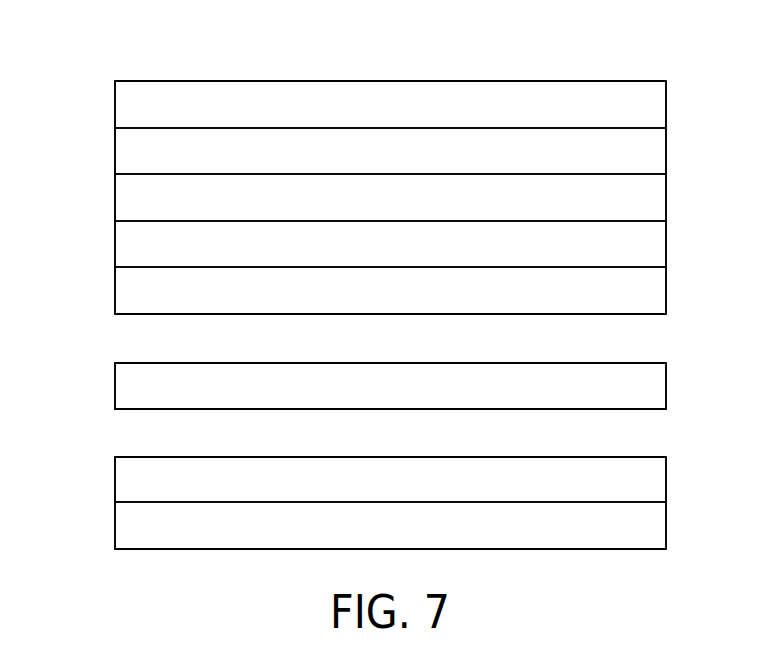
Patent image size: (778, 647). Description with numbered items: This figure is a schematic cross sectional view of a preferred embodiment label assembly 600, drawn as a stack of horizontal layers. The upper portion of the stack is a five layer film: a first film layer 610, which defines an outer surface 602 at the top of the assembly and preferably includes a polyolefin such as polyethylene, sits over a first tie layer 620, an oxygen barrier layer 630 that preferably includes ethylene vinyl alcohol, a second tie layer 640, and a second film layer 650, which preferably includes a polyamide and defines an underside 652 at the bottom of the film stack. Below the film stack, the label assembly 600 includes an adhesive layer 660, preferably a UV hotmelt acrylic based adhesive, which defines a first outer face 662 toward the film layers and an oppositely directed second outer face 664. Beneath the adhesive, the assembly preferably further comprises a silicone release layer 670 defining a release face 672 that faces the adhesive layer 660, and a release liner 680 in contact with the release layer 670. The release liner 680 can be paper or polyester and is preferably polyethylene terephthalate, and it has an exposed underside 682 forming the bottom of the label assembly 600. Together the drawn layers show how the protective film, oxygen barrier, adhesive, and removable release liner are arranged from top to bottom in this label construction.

The label assembly 600 is at (95, 80).
The outer surface 602 is at (598, 81).
The first film layer 610 is at (645, 108).
The first tie layer 620 is at (645, 157).
The oxygen barrier layer 630 is at (645, 206).
The second tie layer 640 is at (645, 243).
The second film layer 650 is at (645, 290).
The underside 652 is at (638, 314).
The adhesive layer 660 is at (650, 398).
The first outer face 662 is at (650, 363).
The second outer face 664 is at (638, 409).
The silicone release layer 670 is at (650, 491).
The release face 672 is at (650, 457).
The release liner 680 is at (650, 527).
The exposed underside 682 is at (605, 550).